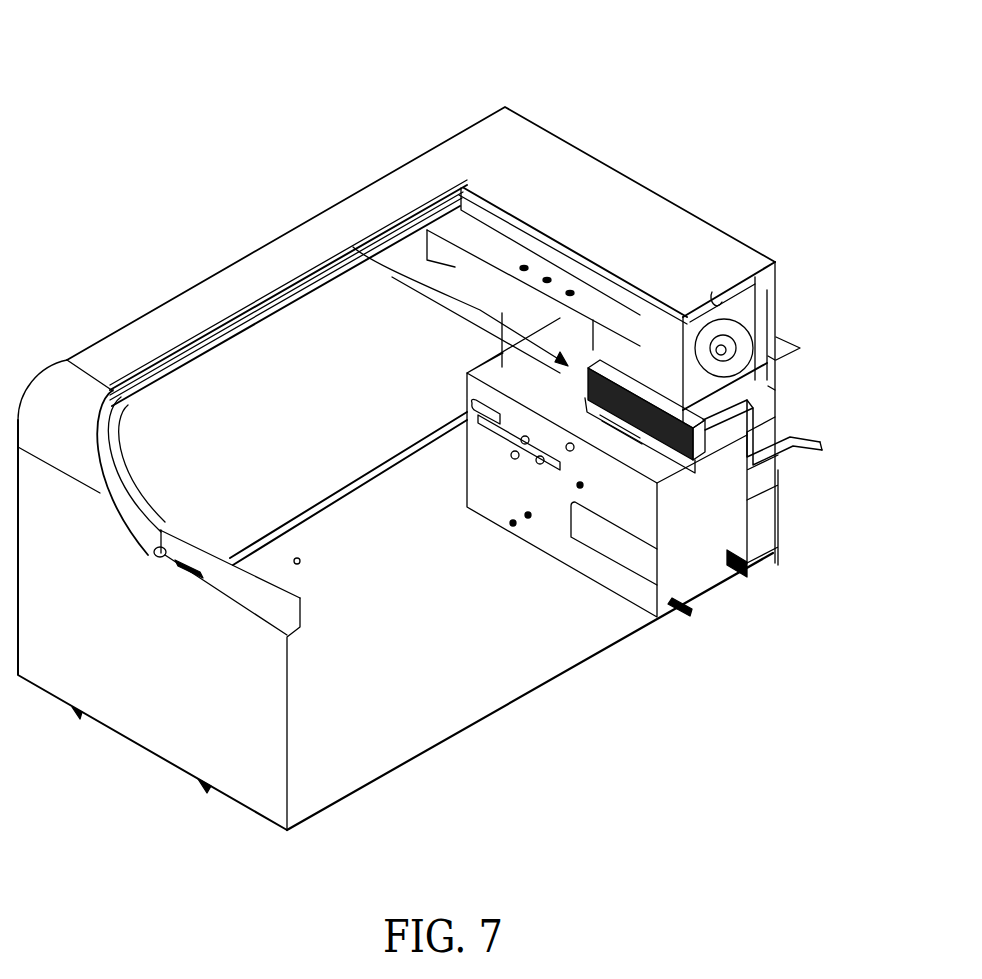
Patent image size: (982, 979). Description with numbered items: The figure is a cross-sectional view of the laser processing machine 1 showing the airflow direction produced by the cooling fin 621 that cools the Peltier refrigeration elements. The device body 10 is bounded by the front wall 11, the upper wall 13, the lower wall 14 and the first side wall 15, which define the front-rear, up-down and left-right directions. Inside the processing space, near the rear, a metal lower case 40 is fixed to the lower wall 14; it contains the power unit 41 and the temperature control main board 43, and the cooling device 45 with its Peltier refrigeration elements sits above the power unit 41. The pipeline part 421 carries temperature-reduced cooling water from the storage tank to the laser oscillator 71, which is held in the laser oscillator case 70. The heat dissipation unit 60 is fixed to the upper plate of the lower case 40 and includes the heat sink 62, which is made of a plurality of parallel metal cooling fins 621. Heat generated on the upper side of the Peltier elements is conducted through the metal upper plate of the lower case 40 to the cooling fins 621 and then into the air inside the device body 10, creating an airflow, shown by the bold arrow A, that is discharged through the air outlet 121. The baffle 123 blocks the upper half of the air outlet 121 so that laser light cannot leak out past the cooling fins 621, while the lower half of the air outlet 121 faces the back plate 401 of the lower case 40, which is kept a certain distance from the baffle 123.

The laser processing machine 1 is at (555, 92).
The device body 10 is at (612, 149).
The front wall 11 is at (78, 714).
The upper wall 13 is at (487, 158).
The lower wall 14 is at (537, 692).
The first side wall 15 is at (247, 373).
The lower case 40 is at (622, 606).
The power unit 41 is at (732, 578).
The temperature control main board 43 is at (462, 455).
The cooling device 45 is at (777, 487).
The heat dissipation unit 60 is at (353, 247).
The heat sink 62 is at (583, 385).
The laser oscillator case 70 is at (778, 292).
The laser oscillator 71 is at (703, 324).
The air outlet 121 is at (778, 362).
The baffle 123 is at (768, 390).
The back plate 401 is at (777, 527).
The pipeline part 421 is at (723, 292).
The cooling fin 621 is at (643, 380).
The airflow A is at (790, 417).